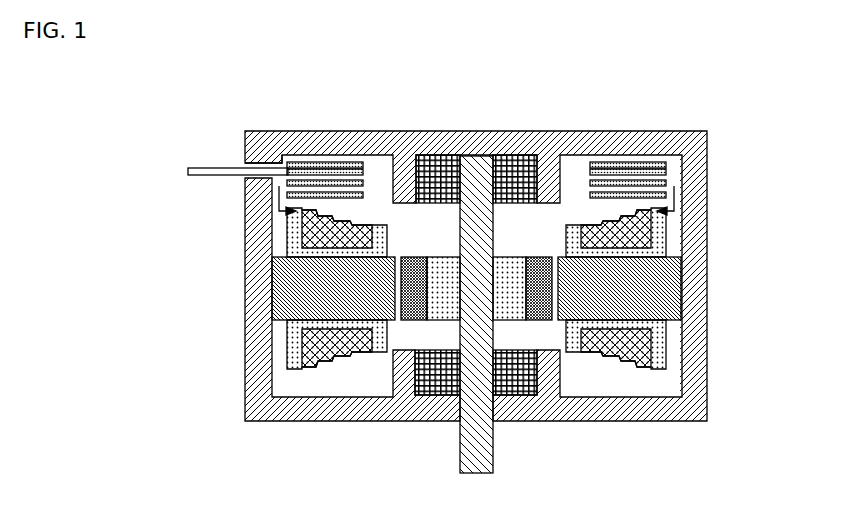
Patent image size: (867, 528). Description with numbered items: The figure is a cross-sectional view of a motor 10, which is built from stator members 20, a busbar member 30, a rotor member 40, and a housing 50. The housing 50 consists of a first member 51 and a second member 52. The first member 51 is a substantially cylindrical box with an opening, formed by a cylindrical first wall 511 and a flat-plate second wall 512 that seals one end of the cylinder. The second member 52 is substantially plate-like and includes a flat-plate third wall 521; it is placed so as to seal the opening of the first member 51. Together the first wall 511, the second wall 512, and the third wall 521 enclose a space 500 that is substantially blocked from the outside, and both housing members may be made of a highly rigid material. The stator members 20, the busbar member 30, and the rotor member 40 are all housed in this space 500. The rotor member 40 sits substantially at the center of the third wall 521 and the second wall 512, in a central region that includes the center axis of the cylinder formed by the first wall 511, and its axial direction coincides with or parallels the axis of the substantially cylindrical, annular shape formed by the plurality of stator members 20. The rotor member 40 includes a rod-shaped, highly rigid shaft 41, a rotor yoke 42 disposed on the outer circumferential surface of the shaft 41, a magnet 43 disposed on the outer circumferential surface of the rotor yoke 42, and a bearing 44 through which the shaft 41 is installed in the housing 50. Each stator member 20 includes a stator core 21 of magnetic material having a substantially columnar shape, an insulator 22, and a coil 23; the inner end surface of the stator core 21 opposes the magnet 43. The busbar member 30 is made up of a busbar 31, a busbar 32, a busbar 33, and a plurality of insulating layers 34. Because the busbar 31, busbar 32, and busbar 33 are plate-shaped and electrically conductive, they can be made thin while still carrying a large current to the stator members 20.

The motor 10 is at (712, 68).
The stator member 20 is at (184, 250).
The stator core 21 is at (278, 287).
The insulator 22 is at (290, 232).
The coil 23 is at (307, 343).
The busbar member 30 is at (772, 158).
The busbar 31 is at (670, 208).
The busbar 32 is at (673, 185).
The busbar 33 is at (665, 178).
The insulating layer 34 is at (660, 172).
The rotor member 40 is at (512, 487).
The shaft 41 is at (505, 312).
The rotor yoke 42 is at (527, 300).
The magnet 43 is at (483, 305).
The bearing 44 is at (516, 155).
The housing 50 is at (173, 78).
The first member 51 is at (245, 187).
The second member 52 is at (297, 137).
The space 500 is at (272, 156).
The first wall 511 is at (238, 213).
The second wall 512 is at (345, 428).
The third wall 521 is at (354, 128).